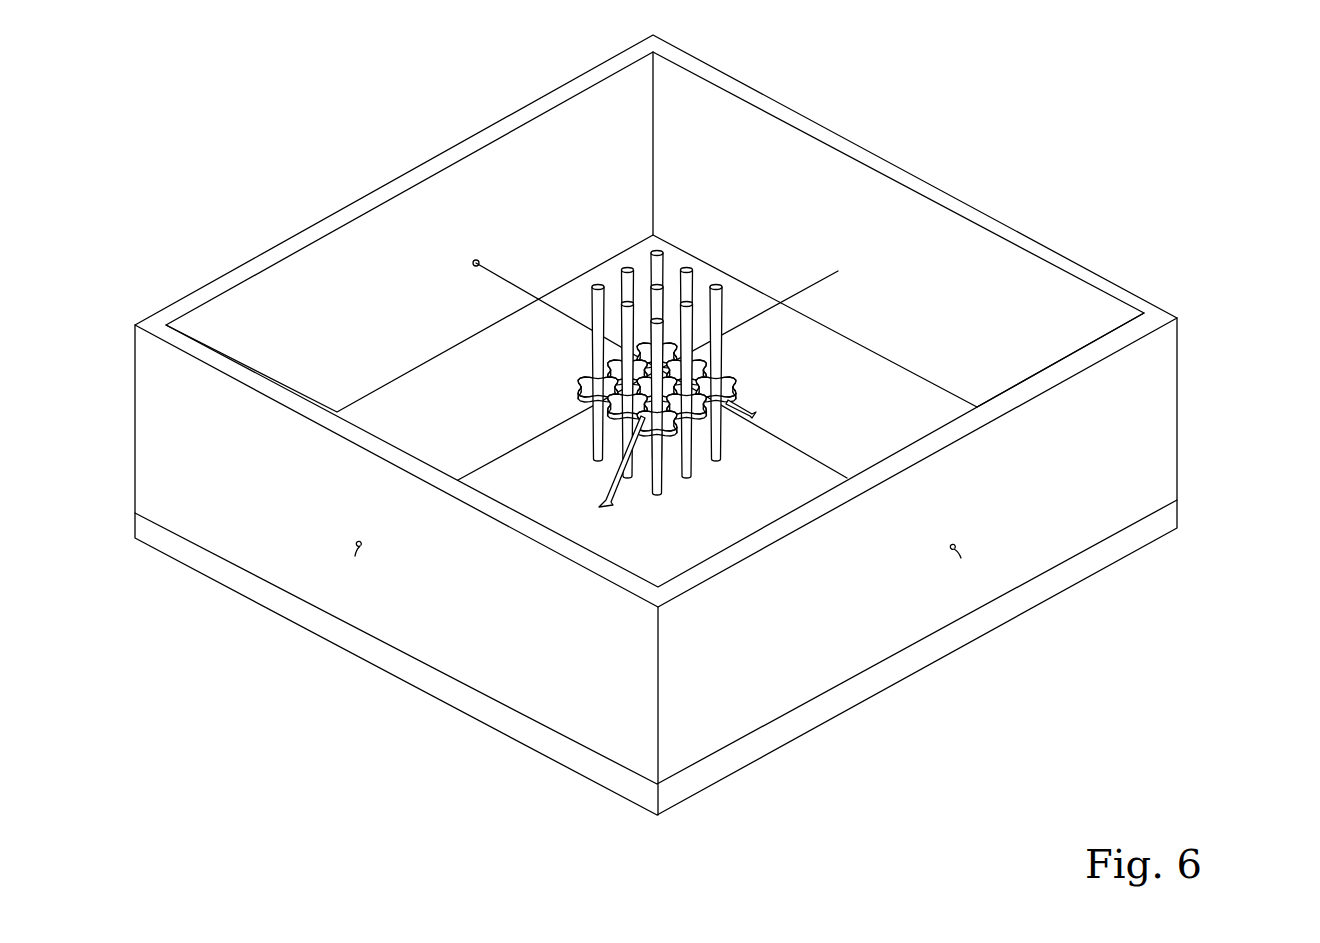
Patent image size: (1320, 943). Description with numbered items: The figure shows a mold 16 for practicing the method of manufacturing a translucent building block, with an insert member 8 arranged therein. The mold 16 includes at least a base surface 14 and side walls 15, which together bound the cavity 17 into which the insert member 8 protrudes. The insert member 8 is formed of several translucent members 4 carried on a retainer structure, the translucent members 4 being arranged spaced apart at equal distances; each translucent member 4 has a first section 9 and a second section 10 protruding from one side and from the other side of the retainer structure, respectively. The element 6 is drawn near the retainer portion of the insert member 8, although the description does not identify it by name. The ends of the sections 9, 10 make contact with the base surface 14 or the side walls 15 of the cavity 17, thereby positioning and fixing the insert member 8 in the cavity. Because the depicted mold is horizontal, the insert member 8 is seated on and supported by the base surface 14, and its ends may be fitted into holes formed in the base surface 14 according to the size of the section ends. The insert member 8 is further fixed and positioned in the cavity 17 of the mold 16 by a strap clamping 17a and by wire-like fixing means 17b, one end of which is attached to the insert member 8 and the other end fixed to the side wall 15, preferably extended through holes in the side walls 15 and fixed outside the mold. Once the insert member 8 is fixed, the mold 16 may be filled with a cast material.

The mold 16 is at (357, 128).
The side walls 15 is at (476, 648).
The base surface 14 is at (893, 413).
The cavity 17 is at (448, 325).
The strap clamping 17a is at (617, 487).
The wire-like fixing means 17b is at (805, 288).
The translucent members 4 is at (600, 350).
The lower retaining plate 6 is at (617, 387).
The insert member 8 is at (733, 390).
The first section 9 is at (722, 348).
The second section 10 is at (746, 386).